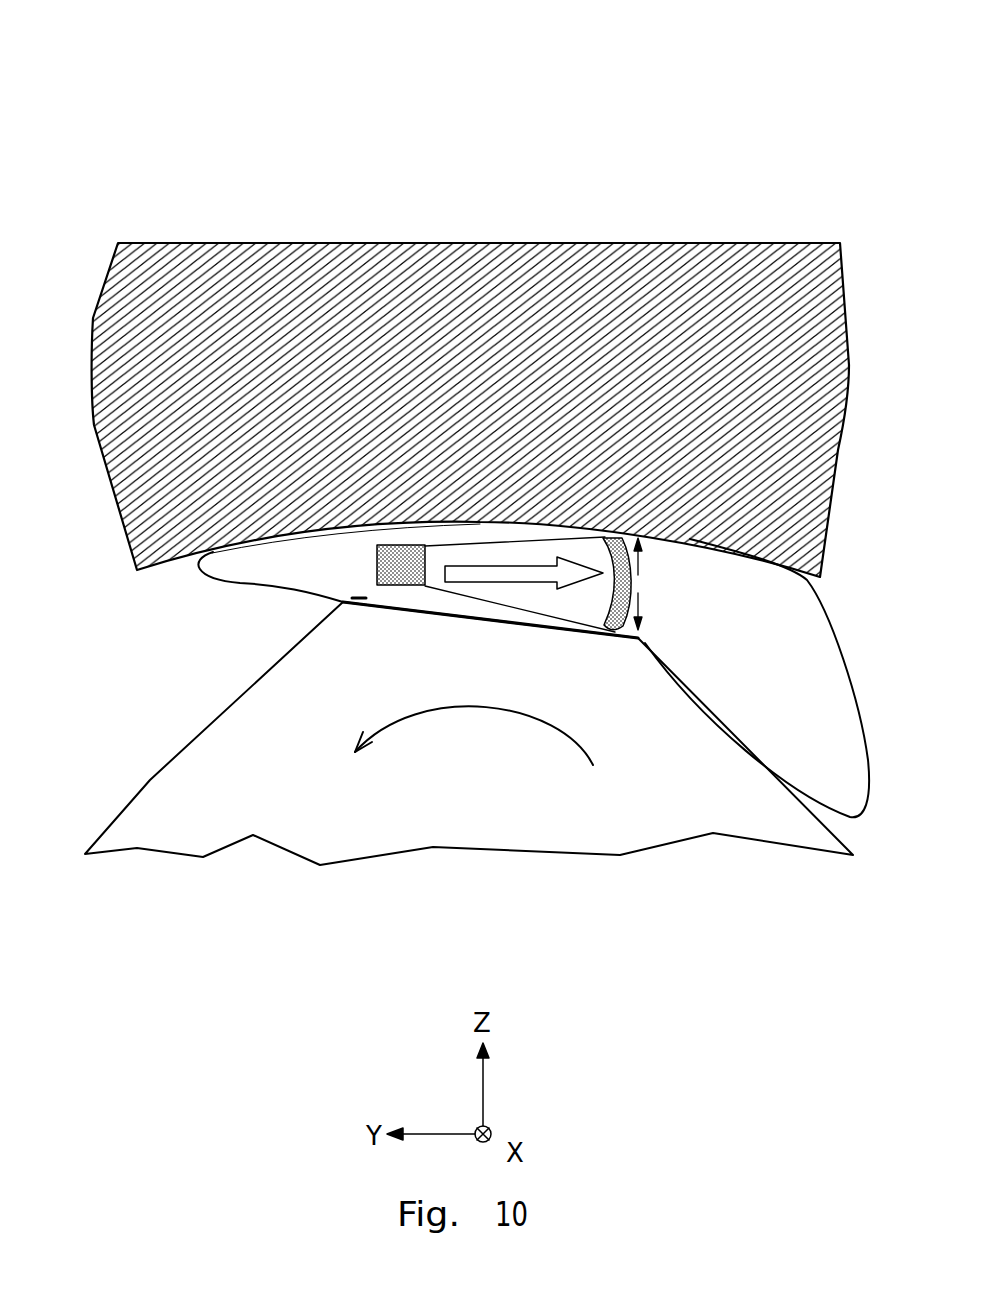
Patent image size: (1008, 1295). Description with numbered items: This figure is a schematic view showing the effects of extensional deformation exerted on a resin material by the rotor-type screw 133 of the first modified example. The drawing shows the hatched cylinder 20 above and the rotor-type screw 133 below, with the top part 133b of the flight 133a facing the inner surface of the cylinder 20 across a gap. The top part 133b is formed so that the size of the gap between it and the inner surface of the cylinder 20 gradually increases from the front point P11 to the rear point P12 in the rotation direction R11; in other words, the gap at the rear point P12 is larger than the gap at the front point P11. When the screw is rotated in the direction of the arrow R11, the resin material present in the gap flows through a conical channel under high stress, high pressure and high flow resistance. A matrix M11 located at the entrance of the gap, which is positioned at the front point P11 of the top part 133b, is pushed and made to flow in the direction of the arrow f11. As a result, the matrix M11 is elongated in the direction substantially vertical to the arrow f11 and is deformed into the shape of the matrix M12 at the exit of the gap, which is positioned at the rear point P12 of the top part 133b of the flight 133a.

The cylinder 20 is at (509, 253).
The rotor-type screw 133 is at (202, 913).
The flight 133a is at (343, 602).
The top part 133b is at (360, 597).
The matrix M11 is at (403, 550).
The matrix M12 is at (620, 563).
The front point P11 is at (343, 601).
The rear point P12 is at (638, 638).
The arrow f11 is at (524, 586).
The rotation direction R11 is at (474, 735).